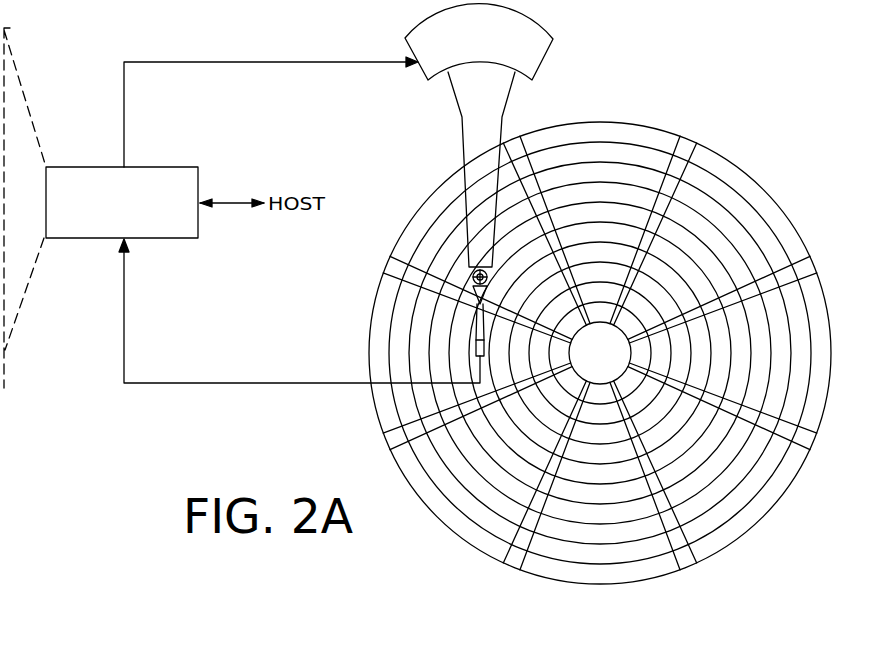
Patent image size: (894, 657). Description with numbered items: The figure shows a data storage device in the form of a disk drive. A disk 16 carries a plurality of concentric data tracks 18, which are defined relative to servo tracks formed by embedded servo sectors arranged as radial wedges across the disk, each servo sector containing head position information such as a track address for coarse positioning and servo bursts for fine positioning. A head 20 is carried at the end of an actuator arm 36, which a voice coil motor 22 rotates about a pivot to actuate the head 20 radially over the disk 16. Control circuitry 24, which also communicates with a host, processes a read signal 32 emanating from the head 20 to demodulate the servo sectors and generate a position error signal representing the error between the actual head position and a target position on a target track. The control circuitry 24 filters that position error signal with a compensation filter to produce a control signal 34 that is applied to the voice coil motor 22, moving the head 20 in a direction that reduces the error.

The disk 16 is at (603, 345).
The tracks 18 is at (599, 150).
The head 20 is at (463, 341).
The voice coil motor 22 is at (427, 71).
The control circuitry 24 is at (160, 166).
The read signal 32 is at (257, 382).
The control signal 34 is at (123, 102).
The actuator arm 36 is at (463, 153).